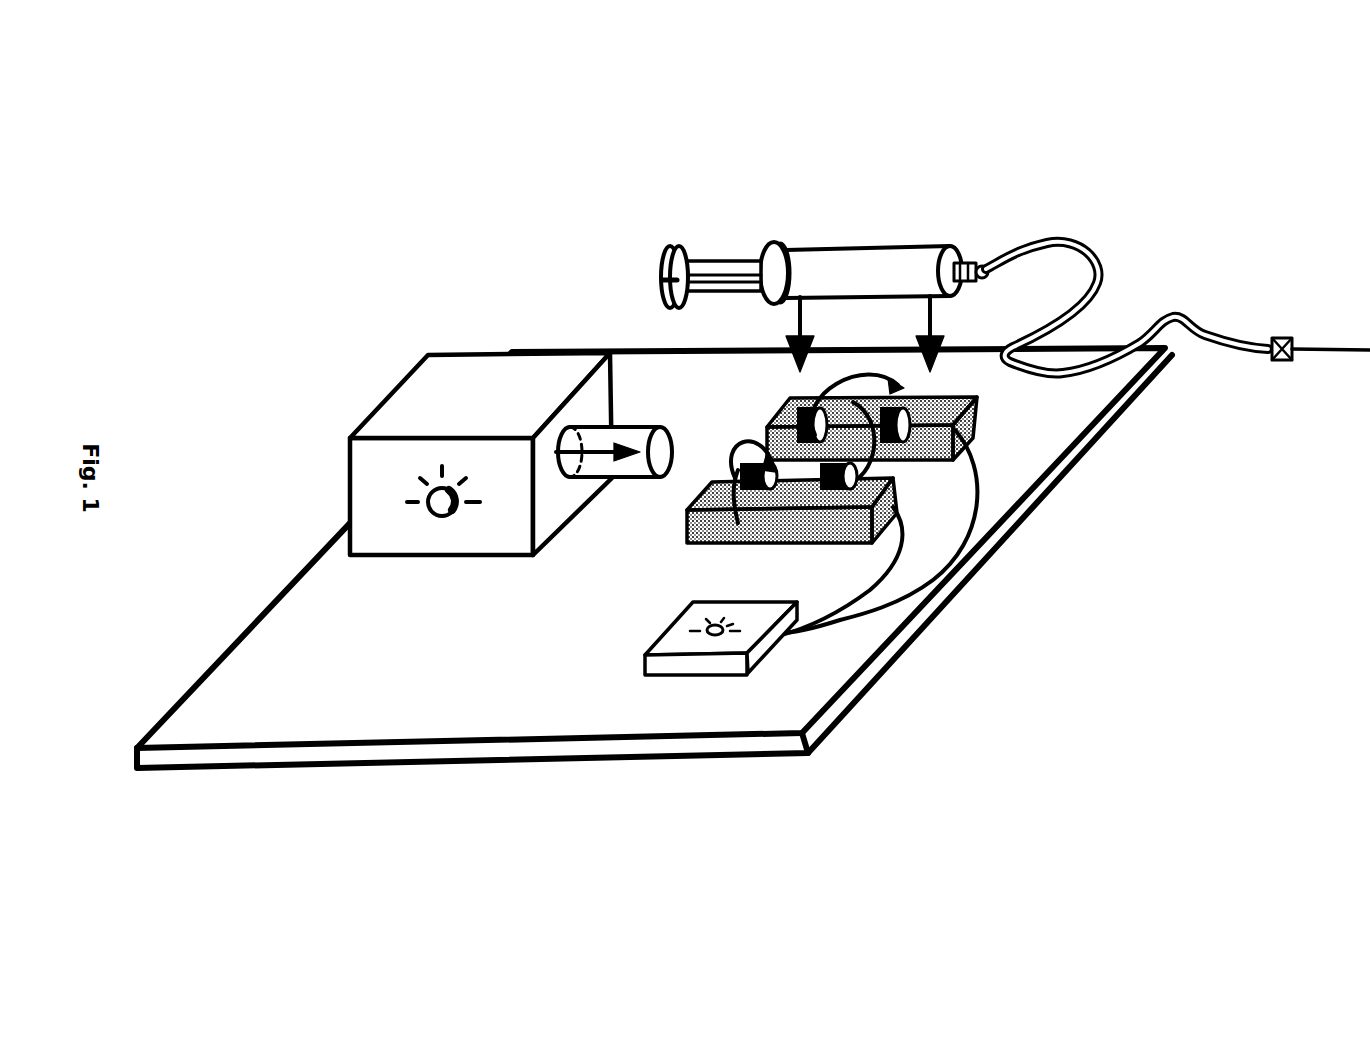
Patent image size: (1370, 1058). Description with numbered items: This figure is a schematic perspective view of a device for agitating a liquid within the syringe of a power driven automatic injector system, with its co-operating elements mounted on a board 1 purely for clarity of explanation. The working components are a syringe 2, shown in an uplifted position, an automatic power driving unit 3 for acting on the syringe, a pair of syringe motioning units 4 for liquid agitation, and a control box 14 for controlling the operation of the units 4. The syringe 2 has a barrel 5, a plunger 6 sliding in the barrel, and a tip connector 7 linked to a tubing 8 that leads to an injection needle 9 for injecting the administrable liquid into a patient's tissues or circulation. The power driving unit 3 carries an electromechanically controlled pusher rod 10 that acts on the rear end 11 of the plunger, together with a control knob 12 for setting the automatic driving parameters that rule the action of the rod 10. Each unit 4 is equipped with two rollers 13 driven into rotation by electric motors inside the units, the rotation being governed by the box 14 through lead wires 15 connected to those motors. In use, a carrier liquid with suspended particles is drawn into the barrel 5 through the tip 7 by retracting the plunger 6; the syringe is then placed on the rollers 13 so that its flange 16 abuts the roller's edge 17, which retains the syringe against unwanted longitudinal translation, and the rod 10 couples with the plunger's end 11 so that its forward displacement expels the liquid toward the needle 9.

The board 1 is at (654, 558).
The syringe 2 is at (812, 211).
The automatic power driving unit 3 is at (472, 387).
The syringe motioning unit 4 is at (825, 482).
The barrel 5 is at (913, 252).
The plunger 6 is at (712, 250).
The tip connector 7 is at (975, 287).
The tubing 8 is at (1115, 274).
The injection needle 9 is at (1313, 336).
The pusher rod 10 is at (665, 449).
The rear end of the syringe plunger 11 is at (652, 283).
The control knob 12 is at (442, 508).
The rollers 13 is at (850, 488).
The control box 14 is at (693, 673).
The lead wires 15 is at (863, 633).
The flange 16 is at (773, 238).
The roller's edge 17 is at (735, 472).